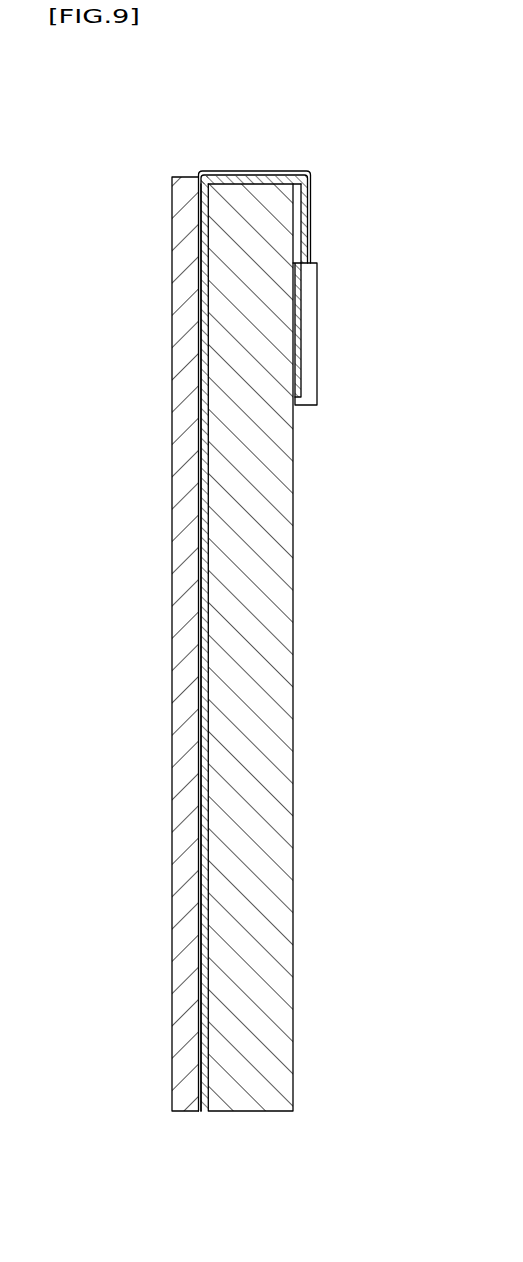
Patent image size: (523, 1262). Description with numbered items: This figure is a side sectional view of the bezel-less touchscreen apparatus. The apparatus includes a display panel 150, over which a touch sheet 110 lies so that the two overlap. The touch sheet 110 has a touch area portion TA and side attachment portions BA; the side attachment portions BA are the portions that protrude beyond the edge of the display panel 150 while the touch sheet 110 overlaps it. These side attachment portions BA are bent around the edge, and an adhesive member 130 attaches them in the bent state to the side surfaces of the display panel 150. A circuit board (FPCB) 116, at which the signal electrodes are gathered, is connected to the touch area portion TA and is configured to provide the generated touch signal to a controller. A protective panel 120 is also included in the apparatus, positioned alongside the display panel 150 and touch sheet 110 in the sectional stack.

The touch sheet 110 is at (310, 268).
The circuit board (FPCB) 116 is at (309, 222).
The protective panel 120 is at (180, 530).
The adhesive member 130 is at (226, 170).
The display panel 150 is at (201, 277).
The side attachment portions BA is at (262, 171).
The touch area portion TA is at (200, 423).